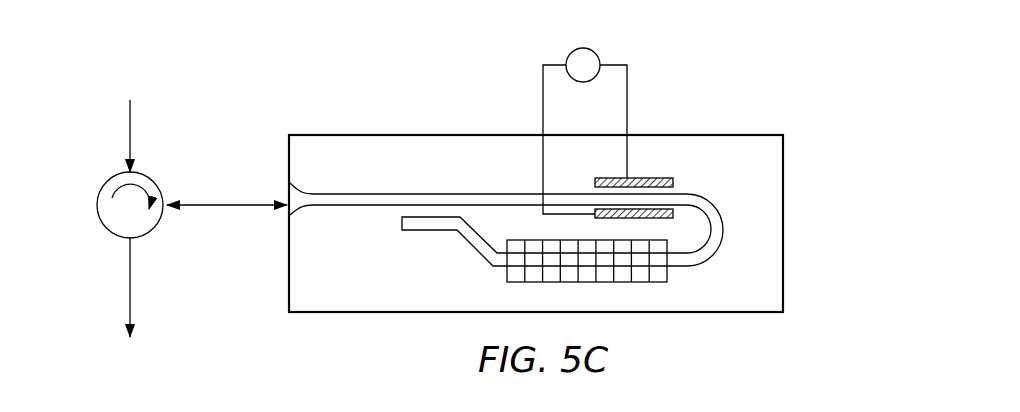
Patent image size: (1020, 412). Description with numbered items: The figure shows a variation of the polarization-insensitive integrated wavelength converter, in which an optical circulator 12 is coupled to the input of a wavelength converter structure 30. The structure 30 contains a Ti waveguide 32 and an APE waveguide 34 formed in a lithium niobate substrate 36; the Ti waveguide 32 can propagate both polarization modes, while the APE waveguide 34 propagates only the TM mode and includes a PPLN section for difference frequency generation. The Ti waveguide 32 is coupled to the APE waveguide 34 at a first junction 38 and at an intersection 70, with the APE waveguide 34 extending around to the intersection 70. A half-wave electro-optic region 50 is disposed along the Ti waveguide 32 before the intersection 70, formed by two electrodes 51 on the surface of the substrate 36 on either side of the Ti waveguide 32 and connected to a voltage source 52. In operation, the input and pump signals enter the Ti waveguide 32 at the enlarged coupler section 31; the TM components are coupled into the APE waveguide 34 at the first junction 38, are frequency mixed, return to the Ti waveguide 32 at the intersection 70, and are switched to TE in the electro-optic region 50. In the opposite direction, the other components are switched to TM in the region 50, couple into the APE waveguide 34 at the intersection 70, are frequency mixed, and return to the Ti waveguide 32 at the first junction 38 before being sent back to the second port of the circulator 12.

The optical circulator 12 is at (101, 186).
The wavelength converter structure 30 is at (536, 170).
The enlarged coupler section 31 is at (303, 191).
The Ti waveguide 32 is at (402, 203).
The APE waveguide 34 is at (480, 252).
The substrate 36 is at (360, 293).
The first junction 38 is at (413, 212).
The half-wave electro-optic region 50 is at (608, 198).
The electrodes 51 is at (641, 211).
The voltage source 52 is at (602, 57).
The intersection 70 is at (667, 203).